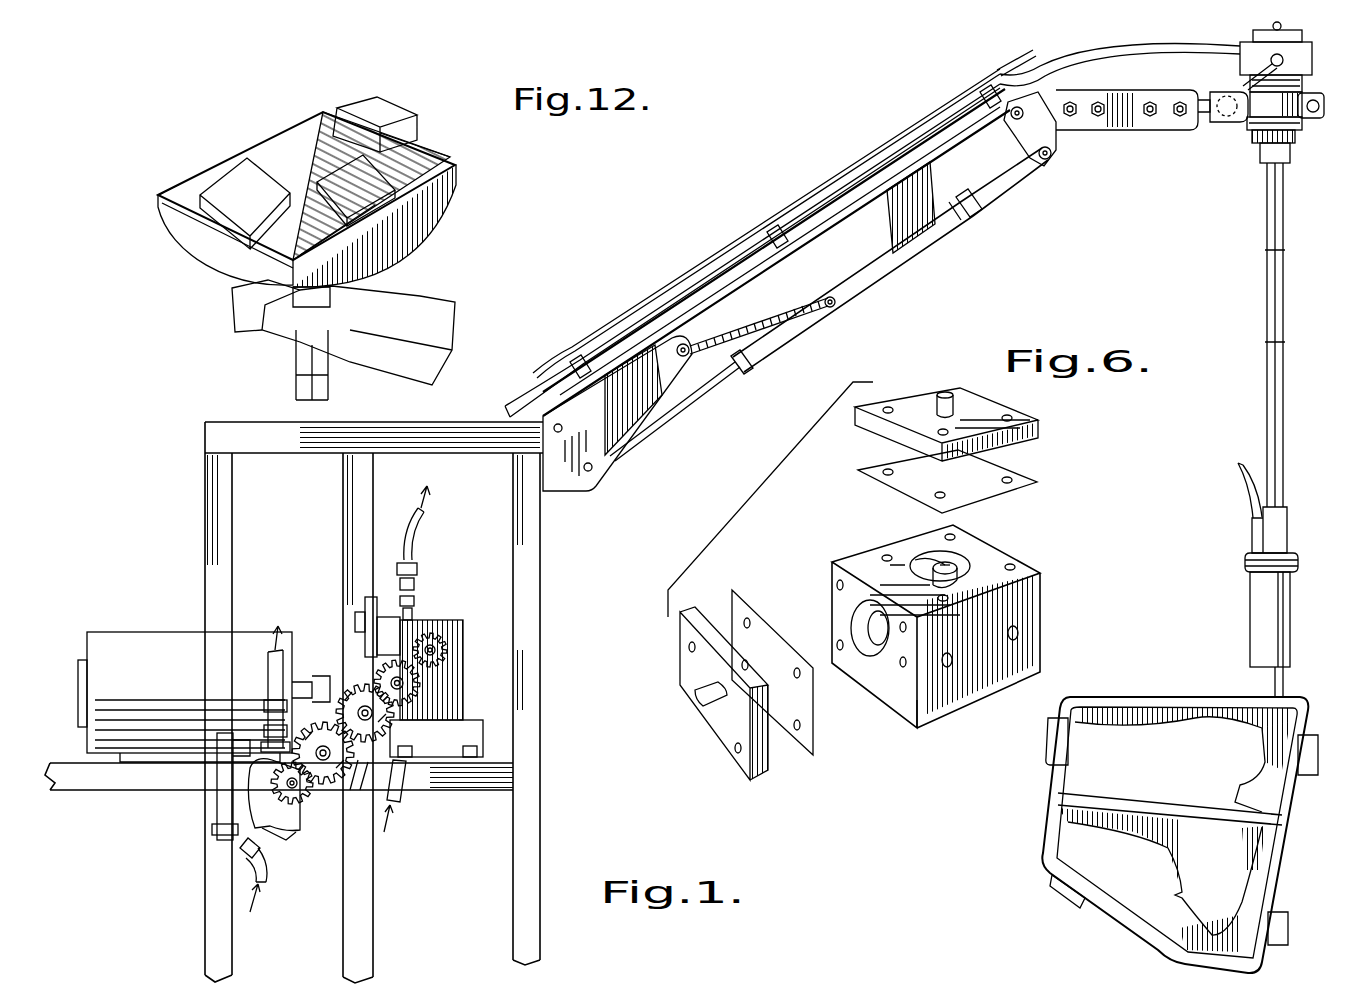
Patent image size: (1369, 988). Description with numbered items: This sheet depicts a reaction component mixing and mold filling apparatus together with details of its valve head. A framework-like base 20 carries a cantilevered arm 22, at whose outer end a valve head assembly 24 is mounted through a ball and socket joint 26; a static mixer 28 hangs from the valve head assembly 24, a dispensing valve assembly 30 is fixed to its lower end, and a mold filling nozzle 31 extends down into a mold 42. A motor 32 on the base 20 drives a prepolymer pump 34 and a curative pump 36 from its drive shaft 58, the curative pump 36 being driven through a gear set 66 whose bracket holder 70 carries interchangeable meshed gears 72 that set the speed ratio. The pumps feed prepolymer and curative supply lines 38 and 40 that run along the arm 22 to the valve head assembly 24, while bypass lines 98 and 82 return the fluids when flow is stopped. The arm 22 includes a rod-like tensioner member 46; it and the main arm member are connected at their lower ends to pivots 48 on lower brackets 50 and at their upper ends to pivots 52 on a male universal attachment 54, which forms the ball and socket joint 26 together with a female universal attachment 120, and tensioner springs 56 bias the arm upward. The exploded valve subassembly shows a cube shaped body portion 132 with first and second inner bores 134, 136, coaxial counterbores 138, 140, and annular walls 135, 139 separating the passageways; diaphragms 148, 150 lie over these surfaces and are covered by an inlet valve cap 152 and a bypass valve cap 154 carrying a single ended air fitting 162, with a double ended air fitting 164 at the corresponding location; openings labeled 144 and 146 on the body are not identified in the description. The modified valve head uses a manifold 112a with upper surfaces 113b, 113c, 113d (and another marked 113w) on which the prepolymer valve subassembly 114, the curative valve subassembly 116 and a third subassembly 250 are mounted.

In FIG. 1, the base 20 is at (205, 497).
In FIG. 1, the arm 22 is at (977, 232).
In FIG. 12, the valve head assembly 24 is at (183, 109).
In FIG. 1, the valve head assembly 24 is at (1332, 88).
In FIG. 12, the ball and socket joint 26 is at (226, 355).
In FIG. 1, the ball and socket joint 26 is at (1222, 122).
In FIG. 1, the static mixer 28 is at (1285, 365).
In FIG. 1, the dispensing valve assembly 30 is at (1312, 598).
In FIG. 1, the mold filling nozzle 31 is at (1285, 690).
In FIG. 1, the motor 32 is at (135, 632).
In FIG. 1, the prepolymer pump 34 is at (460, 628).
In FIG. 1, the curative pump 36 is at (258, 748).
In FIG. 1, the prepolymer supply line 38 is at (416, 532).
In FIG. 1, the curative supply line 40 is at (267, 660).
In FIG. 1, the mold 42 is at (1170, 716).
In FIG. 1, the tensioner member 46 is at (870, 285).
In FIG. 1, the pivots 48 is at (566, 430).
In FIG. 1, the lower brackets 50 is at (645, 425).
In FIG. 1, the pivots 52 is at (1013, 120).
In FIG. 1, the male universal attachment 54 is at (1130, 125).
In FIG. 1, the tensioner springs 56 is at (798, 318).
In FIG. 1, the drive shaft 58 is at (306, 680).
In FIG. 1, the gear set 66 is at (330, 808).
In FIG. 1, the bracket holder 70 is at (285, 835).
In FIG. 1, the interchangeable meshed gears 72 is at (355, 790).
In FIG. 1, the curative bypass line 82 is at (1078, 84).
In FIG. 1, the prepolymer bypass line 98 is at (505, 416).
In FIG. 12, the modified manifold 112a is at (190, 243).
In FIG. 12, the upper surface 113b is at (430, 178).
In FIG. 12, the upper surface 113c is at (178, 193).
In FIG. 12, the upper surface 113d is at (296, 137).
In FIG. 12, the valve body wall 113w is at (425, 150).
In FIG. 12, the prepolymer valve subassembly 114 is at (370, 100).
In FIG. 6, the prepolymer valve subassembly 114 is at (1065, 580).
In FIG. 12, the curative valve subassembly 116 is at (232, 158).
In FIG. 12, the female universal attachment 120 is at (432, 305).
In FIG. 6, the body portion 132 is at (952, 712).
In FIG. 6, the first inner bore 134 is at (935, 560).
In FIG. 6, the annular wall 135 is at (915, 560).
In FIG. 6, the second inner bore 136 is at (866, 633).
In FIG. 6, the first counterbore 138 is at (968, 558).
In FIG. 6, the annular wall 139 is at (870, 672).
In FIG. 6, the second counterbore 140 is at (880, 655).
In FIG. 6, the port 144 is at (1020, 632).
In FIG. 6, the port 146 is at (947, 668).
In FIG. 6, the diaphragm 148 is at (890, 490).
In FIG. 6, the diaphragm 150 is at (813, 758).
In FIG. 6, the inlet valve cap 152 is at (1040, 430).
In FIG. 6, the bypass valve cap 154 is at (755, 782).
In FIG. 6, the single ended air fitting 162 is at (705, 706).
In FIG. 6, the double ended air fitting 164 is at (940, 392).
In FIG. 12, the third subassembly 250 is at (380, 192).